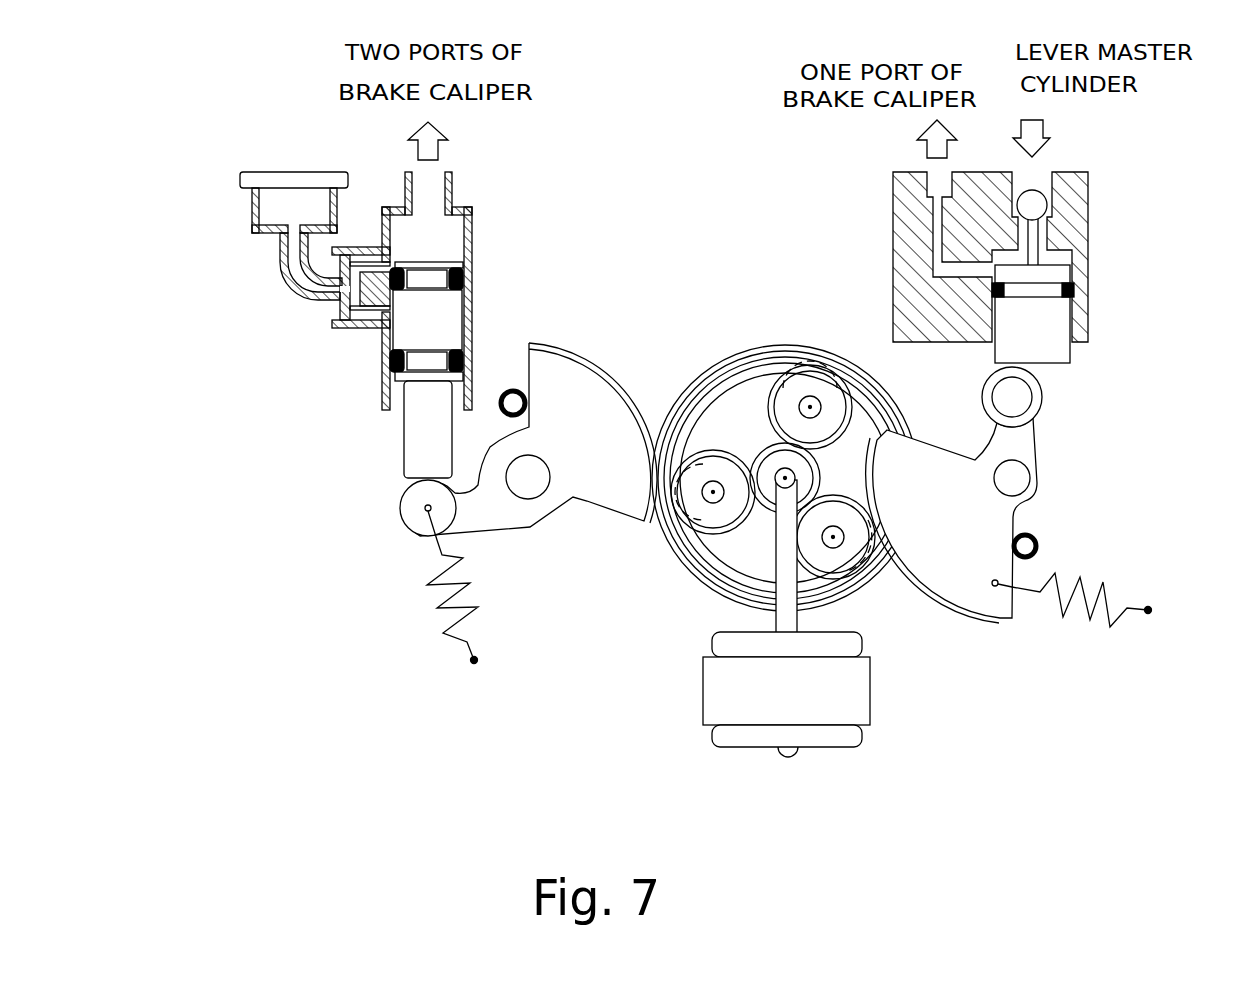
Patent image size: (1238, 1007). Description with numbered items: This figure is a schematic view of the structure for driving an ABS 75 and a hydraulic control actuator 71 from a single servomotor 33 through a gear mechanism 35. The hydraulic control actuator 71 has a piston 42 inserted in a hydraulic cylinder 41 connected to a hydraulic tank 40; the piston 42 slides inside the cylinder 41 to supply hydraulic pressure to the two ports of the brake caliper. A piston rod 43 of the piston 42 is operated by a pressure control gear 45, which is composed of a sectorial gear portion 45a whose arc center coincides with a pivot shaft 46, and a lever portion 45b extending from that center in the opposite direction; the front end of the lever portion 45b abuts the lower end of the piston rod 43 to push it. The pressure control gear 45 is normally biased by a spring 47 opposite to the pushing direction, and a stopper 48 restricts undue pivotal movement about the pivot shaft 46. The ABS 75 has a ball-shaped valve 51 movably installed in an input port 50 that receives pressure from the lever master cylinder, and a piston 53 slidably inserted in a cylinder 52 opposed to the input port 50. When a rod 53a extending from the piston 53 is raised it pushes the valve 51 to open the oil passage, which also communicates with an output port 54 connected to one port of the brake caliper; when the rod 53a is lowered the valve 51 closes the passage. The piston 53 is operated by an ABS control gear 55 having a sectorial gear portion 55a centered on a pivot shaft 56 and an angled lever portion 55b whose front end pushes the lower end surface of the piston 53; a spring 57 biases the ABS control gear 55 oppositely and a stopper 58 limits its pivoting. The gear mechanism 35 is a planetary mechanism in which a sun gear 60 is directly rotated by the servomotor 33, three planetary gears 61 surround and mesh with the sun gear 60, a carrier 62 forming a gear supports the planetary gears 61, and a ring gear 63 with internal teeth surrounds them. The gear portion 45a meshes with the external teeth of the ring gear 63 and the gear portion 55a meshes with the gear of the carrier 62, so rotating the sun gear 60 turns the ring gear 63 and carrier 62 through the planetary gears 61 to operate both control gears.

The servomotor 33 is at (703, 700).
The gear mechanism 35 is at (777, 437).
The hydraulic tank 40 is at (250, 210).
The hydraulic cylinder 41 is at (473, 247).
The piston 42 is at (443, 310).
The piston rod 43 is at (400, 442).
The pressure control gear 45 is at (502, 472).
The gear portion 45a is at (607, 372).
The lever portion 45b is at (417, 542).
The pivot shaft 46 is at (530, 490).
The spring 47 is at (432, 625).
The stopper 48 is at (505, 392).
The input port 50 is at (1018, 255).
The ball-shaped valve 51 is at (1044, 203).
The cylinder 52 is at (1090, 311).
The piston 53 is at (1070, 352).
The rod 53a is at (1043, 240).
The output port 54 is at (928, 172).
The ABS control gear 55 is at (1009, 527).
The gear portion 55a is at (945, 605).
The lever portion 55b is at (1023, 418).
The pivot shaft 56 is at (1020, 485).
The spring 57 is at (1070, 617).
The stopper 58 is at (1038, 546).
The sun gear 60 is at (777, 472).
The planetary gears 61 is at (806, 386).
The carrier 62 is at (853, 443).
The ring gear 63 is at (680, 397).
The hydraulic control actuator 71 is at (288, 316).
The ABS 75 is at (1102, 260).